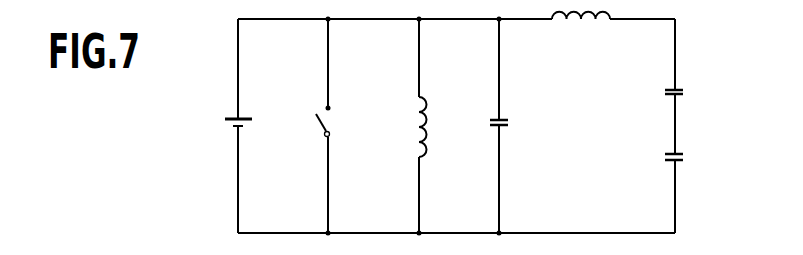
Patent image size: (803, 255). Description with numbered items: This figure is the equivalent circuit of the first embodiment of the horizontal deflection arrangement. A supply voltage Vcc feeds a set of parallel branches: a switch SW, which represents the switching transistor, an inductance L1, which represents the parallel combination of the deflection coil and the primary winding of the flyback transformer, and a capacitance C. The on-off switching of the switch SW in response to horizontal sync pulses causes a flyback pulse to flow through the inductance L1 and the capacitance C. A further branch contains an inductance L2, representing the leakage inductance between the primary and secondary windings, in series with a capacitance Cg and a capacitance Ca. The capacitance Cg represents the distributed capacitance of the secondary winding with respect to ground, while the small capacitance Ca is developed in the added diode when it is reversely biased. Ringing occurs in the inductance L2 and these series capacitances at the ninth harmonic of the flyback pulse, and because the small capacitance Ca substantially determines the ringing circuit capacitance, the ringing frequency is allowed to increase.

The supply voltage Vcc is at (230, 117).
The switch SW is at (318, 116).
The inductance L1 is at (417, 118).
The capacitance C is at (505, 120).
The inductance L2 is at (580, 23).
The capacitance Cg is at (678, 86).
The capacitance Ca is at (678, 153).